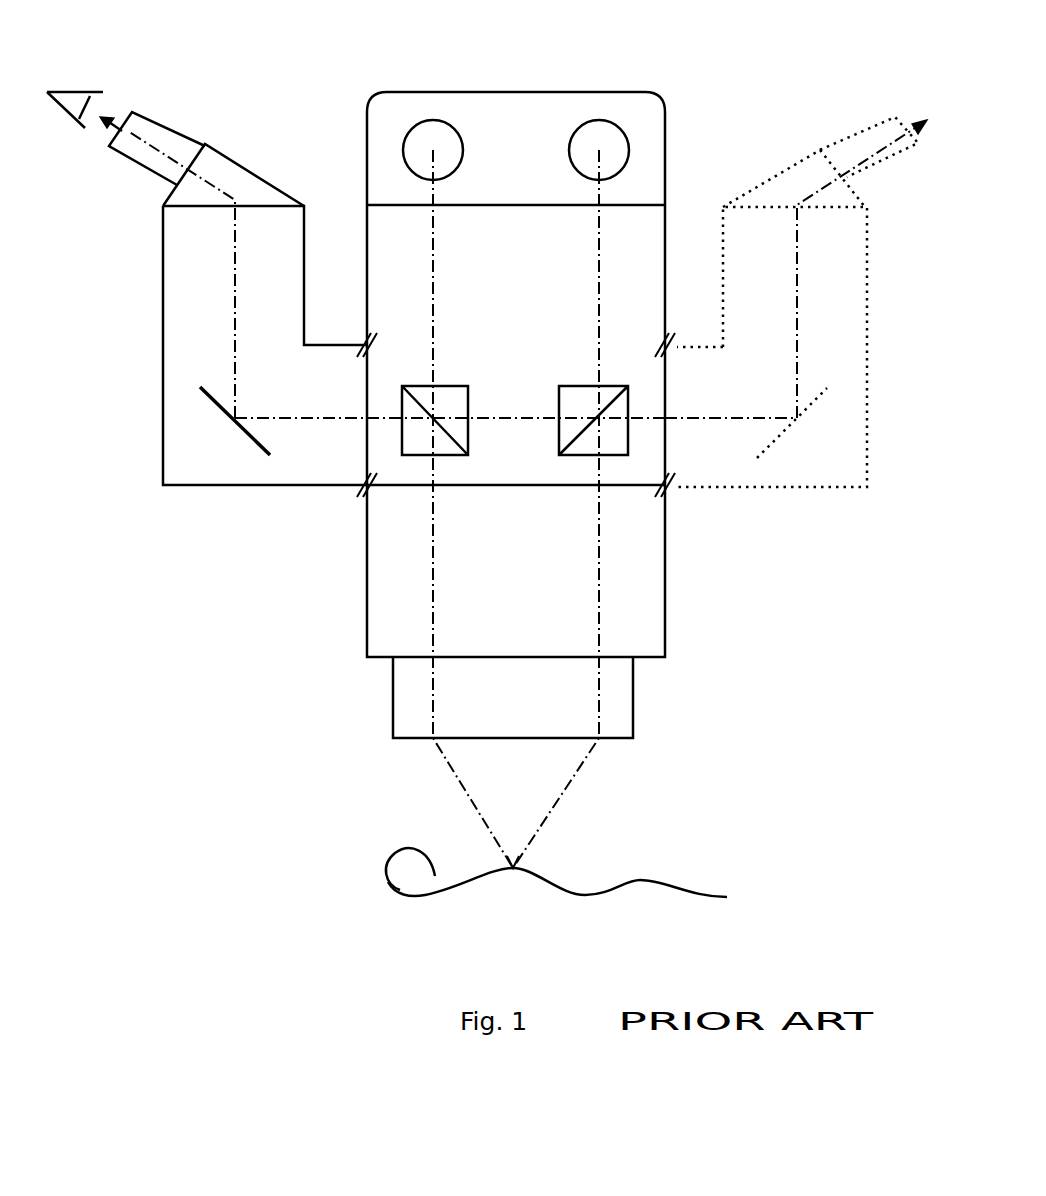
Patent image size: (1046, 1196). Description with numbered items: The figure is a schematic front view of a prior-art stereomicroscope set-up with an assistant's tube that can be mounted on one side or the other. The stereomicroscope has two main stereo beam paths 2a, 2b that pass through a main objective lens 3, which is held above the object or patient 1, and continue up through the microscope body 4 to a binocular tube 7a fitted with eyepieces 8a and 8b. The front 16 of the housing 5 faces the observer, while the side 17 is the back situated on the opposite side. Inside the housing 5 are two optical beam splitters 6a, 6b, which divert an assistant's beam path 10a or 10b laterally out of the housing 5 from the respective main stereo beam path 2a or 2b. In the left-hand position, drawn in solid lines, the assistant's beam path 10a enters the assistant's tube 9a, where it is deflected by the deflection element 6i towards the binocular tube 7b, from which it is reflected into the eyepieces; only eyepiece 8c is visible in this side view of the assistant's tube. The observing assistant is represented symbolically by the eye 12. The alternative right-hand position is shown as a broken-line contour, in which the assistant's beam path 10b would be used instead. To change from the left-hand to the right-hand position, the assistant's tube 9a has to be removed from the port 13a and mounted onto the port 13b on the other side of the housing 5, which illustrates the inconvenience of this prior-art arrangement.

The object or patient 1 is at (388, 877).
The main stereo beam path 2a is at (460, 787).
The main stereo beam path 2b is at (567, 790).
The main objective lens 3 is at (410, 708).
The microscope body 4 is at (385, 618).
The housing 5 is at (647, 263).
The optical beam splitter 6a is at (450, 445).
The optical beam splitter 6b is at (620, 407).
The deflection element 6i is at (260, 452).
The binocular tube 7a is at (400, 105).
The binocular tube 7b is at (223, 173).
The eyepiece 8a is at (447, 137).
The eyepiece 8b is at (603, 140).
The eyepiece 8c is at (162, 135).
The assistant's tube 9a is at (265, 345).
The assistant's beam path 10a is at (233, 372).
The assistant's beam path 10b is at (800, 372).
The eye 12 is at (73, 92).
The port 13a is at (363, 380).
The port 13b is at (665, 440).
The front 16 is at (516, 345).
The side 17 is at (668, 212).